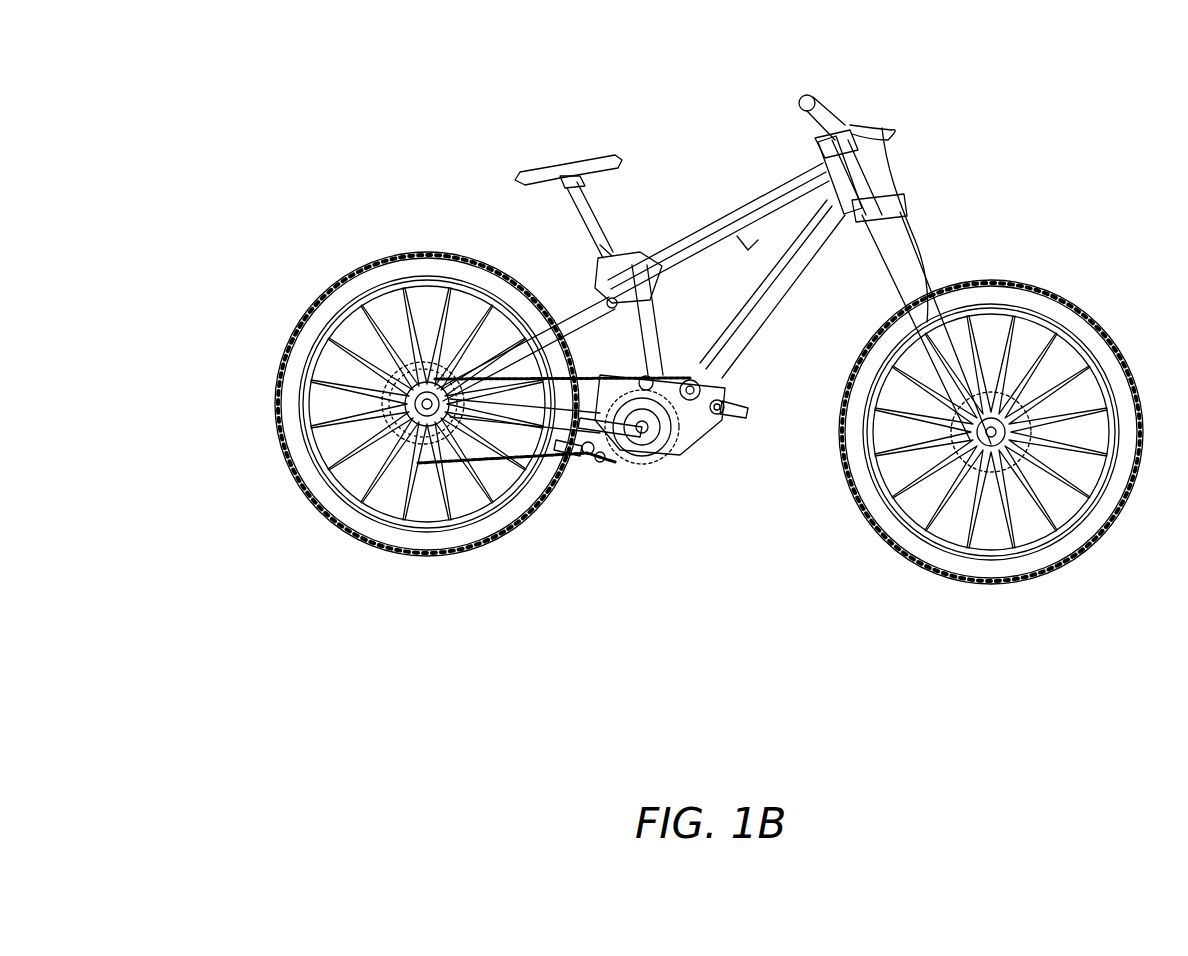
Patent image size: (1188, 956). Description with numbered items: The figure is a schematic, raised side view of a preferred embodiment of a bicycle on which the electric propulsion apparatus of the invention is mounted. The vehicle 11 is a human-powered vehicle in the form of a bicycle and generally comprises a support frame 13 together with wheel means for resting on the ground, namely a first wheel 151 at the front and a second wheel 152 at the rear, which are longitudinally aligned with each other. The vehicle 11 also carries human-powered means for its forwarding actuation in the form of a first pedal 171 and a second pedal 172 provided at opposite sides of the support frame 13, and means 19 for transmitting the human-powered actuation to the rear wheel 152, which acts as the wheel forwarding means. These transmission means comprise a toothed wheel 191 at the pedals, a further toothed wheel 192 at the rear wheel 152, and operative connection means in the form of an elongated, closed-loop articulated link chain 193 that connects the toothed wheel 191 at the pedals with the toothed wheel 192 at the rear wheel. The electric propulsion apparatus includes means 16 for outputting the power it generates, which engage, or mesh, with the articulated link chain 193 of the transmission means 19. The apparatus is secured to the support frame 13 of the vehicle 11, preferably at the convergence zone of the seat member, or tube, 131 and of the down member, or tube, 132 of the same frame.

The vehicle 11 is at (500, 152).
The support frame 13 is at (768, 182).
The seat member 131 is at (598, 257).
The down member 132 is at (752, 293).
The first wheel 151 is at (1055, 303).
The second wheel 152 is at (360, 262).
The means for outputting the power 16 is at (710, 368).
The first pedal 171 is at (740, 418).
The second pedal 172 is at (585, 448).
The means for transmitting the human-powered actuation 19 is at (597, 460).
The toothed wheel 191 is at (660, 378).
The toothed wheel 192 is at (300, 378).
The articulated link chain 193 is at (675, 442).